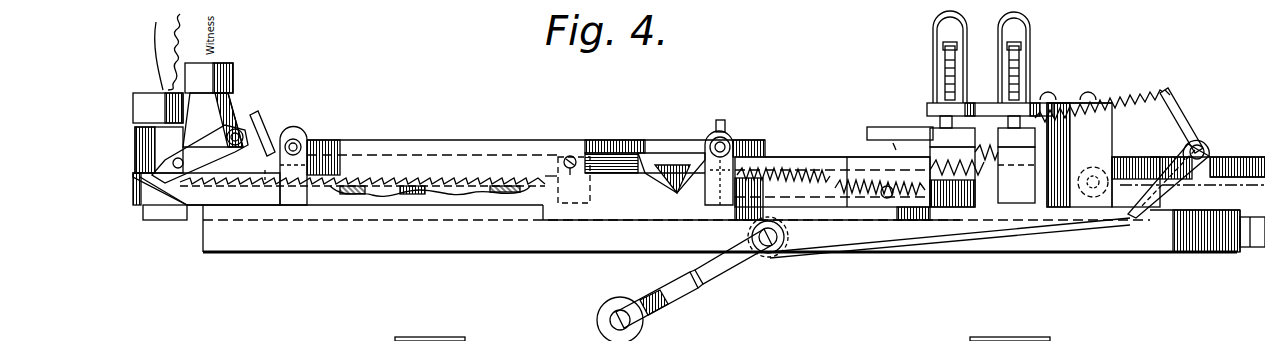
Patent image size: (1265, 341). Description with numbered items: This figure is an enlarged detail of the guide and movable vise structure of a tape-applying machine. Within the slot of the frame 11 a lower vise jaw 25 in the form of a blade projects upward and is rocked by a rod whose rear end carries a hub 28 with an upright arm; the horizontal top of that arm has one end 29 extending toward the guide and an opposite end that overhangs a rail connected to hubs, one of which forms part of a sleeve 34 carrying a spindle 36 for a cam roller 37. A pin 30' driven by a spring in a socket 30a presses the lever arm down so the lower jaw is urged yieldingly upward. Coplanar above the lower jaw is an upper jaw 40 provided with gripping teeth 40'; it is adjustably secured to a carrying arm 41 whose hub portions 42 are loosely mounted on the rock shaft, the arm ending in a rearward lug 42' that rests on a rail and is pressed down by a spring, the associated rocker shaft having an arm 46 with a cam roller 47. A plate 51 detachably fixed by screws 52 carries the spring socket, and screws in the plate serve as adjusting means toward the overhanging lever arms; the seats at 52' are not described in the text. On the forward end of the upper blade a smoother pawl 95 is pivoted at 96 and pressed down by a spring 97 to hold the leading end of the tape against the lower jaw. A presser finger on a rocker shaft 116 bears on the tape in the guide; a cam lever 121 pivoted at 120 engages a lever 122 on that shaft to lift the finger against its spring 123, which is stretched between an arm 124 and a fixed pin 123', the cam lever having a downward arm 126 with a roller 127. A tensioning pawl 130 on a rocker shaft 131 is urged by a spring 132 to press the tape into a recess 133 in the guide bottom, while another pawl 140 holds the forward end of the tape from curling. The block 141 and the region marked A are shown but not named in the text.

The frame 11 is at (562, 252).
The lower vise jaw 25 is at (168, 220).
The hub 28 is at (1062, 150).
The lever arm end 29 is at (1088, 104).
The socket 30a is at (1033, 32).
The pin 30' is at (1054, 127).
The sleeve 34 is at (372, 340).
The spindle 36 is at (220, 62).
The cam roller 37 is at (233, 76).
The upper jaw 40 is at (570, 165).
The gripping teeth 40' is at (430, 174).
The carrying arm 41 is at (617, 140).
The hub portions 42 is at (844, 201).
The lug or presser pin 42' is at (900, 128).
The arm 46 is at (150, 220).
The cam roller 47 is at (142, 100).
The plate 51 is at (930, 106).
The screws 52 is at (960, 98).
The spring seat 52' is at (1090, 82).
The pawl 95 is at (218, 150).
The pivot 96 is at (262, 128).
The spring 97 is at (218, 120).
The rocker shaft 116 is at (1208, 148).
The pivot 120 is at (774, 242).
The cam lever 121 is at (876, 240).
The lever 122 is at (1130, 220).
The actuating spring 123 is at (723, 198).
The pin 123' is at (875, 158).
The arm 124 is at (1182, 112).
The arm 126 is at (720, 275).
The roller 127 is at (612, 300).
The pawl 130 is at (700, 150).
The rocker shaft 131 is at (730, 128).
The spring 132 is at (822, 175).
The recess 133 is at (668, 195).
The pawl 140 is at (265, 190).
The block 141 is at (300, 142).
The insert A is at (590, 140).